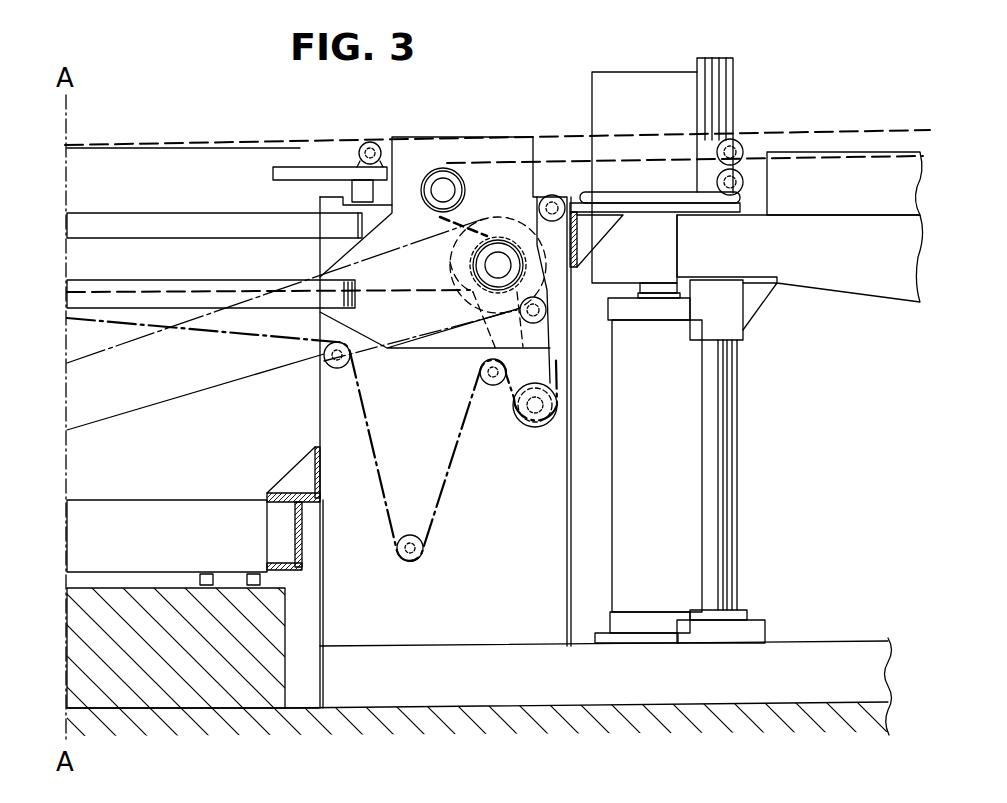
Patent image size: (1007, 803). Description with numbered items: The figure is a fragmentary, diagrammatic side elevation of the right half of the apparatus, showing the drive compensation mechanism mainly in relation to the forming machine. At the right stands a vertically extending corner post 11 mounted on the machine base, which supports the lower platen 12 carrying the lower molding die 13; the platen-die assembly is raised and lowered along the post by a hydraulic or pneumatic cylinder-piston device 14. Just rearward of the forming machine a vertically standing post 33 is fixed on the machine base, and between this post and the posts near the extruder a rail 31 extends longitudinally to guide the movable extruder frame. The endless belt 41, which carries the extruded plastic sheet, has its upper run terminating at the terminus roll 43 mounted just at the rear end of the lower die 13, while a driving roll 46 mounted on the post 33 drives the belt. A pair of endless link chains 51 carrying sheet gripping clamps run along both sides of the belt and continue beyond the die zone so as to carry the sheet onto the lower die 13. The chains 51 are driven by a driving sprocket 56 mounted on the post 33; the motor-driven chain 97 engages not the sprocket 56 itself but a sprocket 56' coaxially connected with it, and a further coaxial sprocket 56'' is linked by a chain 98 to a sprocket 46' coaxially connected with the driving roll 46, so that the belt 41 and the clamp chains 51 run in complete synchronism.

The corner post 11 is at (718, 60).
The lower platen 12 is at (900, 278).
The lower molding die 13 is at (900, 190).
The hydraulic or pneumatic cylinder-piston device 14 is at (693, 438).
The rail 31 is at (168, 213).
The post 33 is at (455, 635).
The endless belt 41 is at (110, 150).
The terminus roll 43 is at (742, 142).
The driving roll 46 is at (535, 436).
The sprocket 46' is at (312, 439).
The endless link chain 51 is at (170, 145).
The driving sprocket 56 is at (473, 230).
The sprocket 56' is at (472, 265).
The sprocket 56'' is at (444, 292).
The chain 97 is at (93, 358).
The chain 98 is at (487, 330).